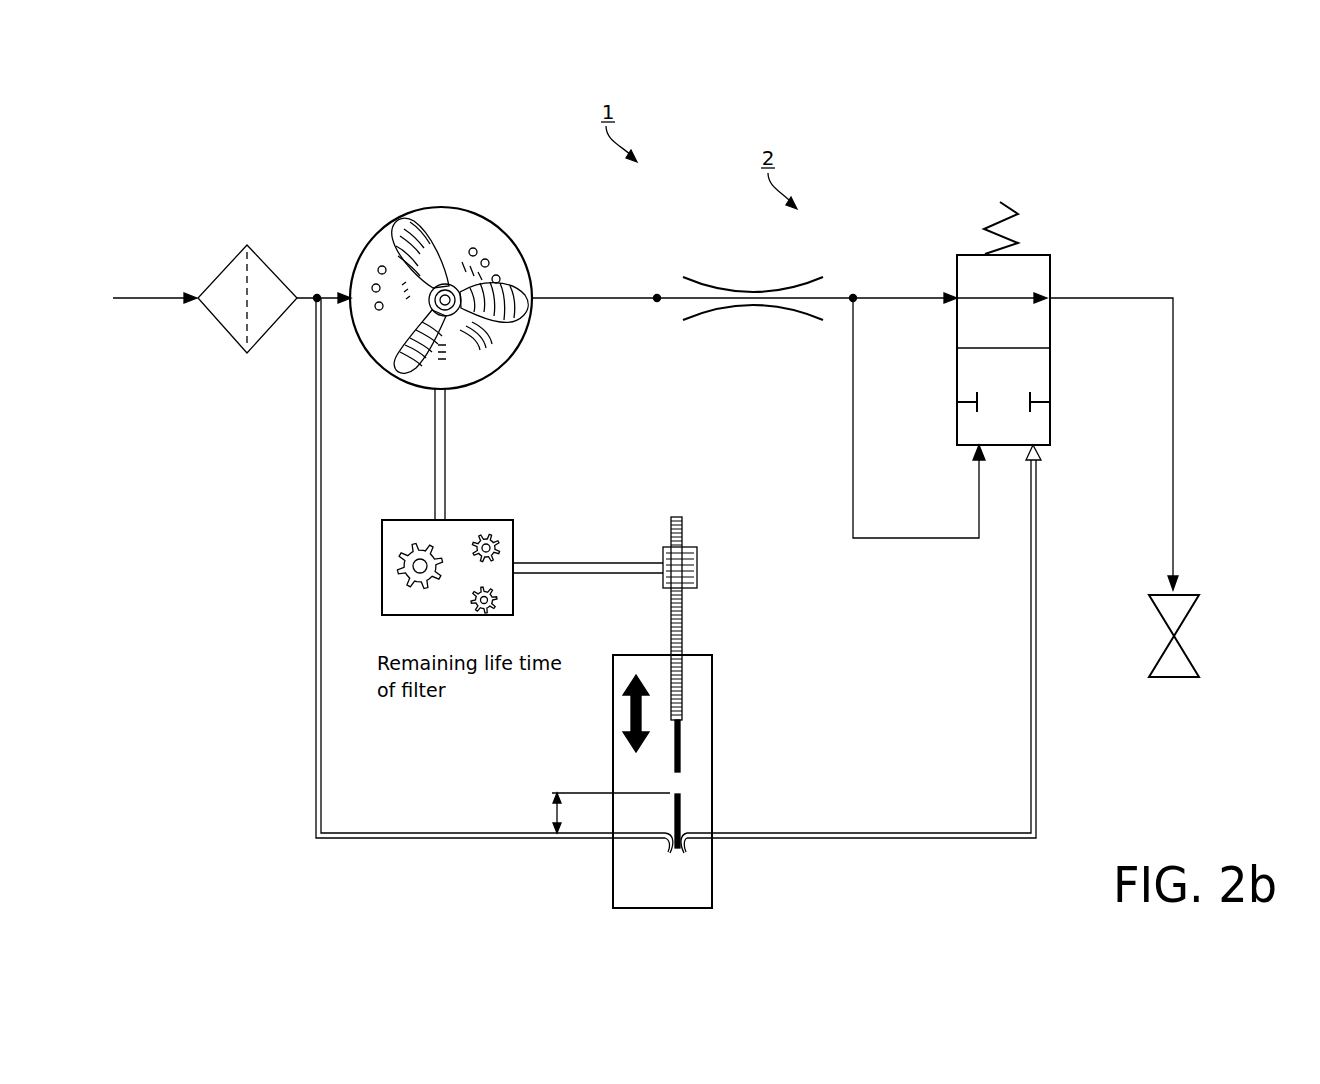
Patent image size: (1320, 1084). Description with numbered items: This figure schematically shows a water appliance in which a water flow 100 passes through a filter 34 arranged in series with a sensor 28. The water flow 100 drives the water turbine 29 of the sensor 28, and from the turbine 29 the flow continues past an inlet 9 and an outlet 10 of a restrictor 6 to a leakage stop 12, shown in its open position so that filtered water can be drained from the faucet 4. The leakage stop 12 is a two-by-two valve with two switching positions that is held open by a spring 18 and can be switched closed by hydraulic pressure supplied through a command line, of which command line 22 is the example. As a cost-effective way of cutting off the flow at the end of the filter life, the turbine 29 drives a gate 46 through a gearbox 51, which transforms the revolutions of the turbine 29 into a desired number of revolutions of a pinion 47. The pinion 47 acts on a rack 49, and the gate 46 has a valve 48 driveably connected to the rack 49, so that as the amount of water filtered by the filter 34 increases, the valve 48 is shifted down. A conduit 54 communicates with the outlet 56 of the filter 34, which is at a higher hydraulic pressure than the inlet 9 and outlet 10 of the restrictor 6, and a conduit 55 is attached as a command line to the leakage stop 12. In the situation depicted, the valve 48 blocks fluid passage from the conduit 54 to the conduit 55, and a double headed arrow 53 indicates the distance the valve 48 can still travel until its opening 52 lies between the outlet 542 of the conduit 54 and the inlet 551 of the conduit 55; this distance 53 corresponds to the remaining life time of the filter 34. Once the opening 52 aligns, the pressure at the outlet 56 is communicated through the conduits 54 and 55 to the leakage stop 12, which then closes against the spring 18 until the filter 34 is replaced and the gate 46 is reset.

The faucet 4 is at (1160, 655).
The restrictor 6 is at (752, 290).
The inlet 9 is at (657, 294).
The outlet 10 is at (853, 294).
The leakage stop 12 is at (1052, 262).
The spring 18 is at (996, 216).
The command line 22 is at (920, 537).
The sensor 28 is at (444, 277).
The water turbine 29 is at (483, 233).
The filter 34 is at (222, 270).
The gate 46 is at (705, 706).
The pinion 47 is at (700, 570).
The valve 48 is at (682, 820).
The rack 49 is at (684, 618).
The gearbox 51 is at (490, 519).
The opening 52 is at (680, 781).
The distance 53 is at (555, 815).
The conduit 54 is at (315, 765).
The conduit 55 is at (860, 832).
The outlet 56 is at (319, 295).
The water flow 100 is at (151, 295).
The outlet 542 is at (662, 852).
The inlet 551 is at (690, 852).